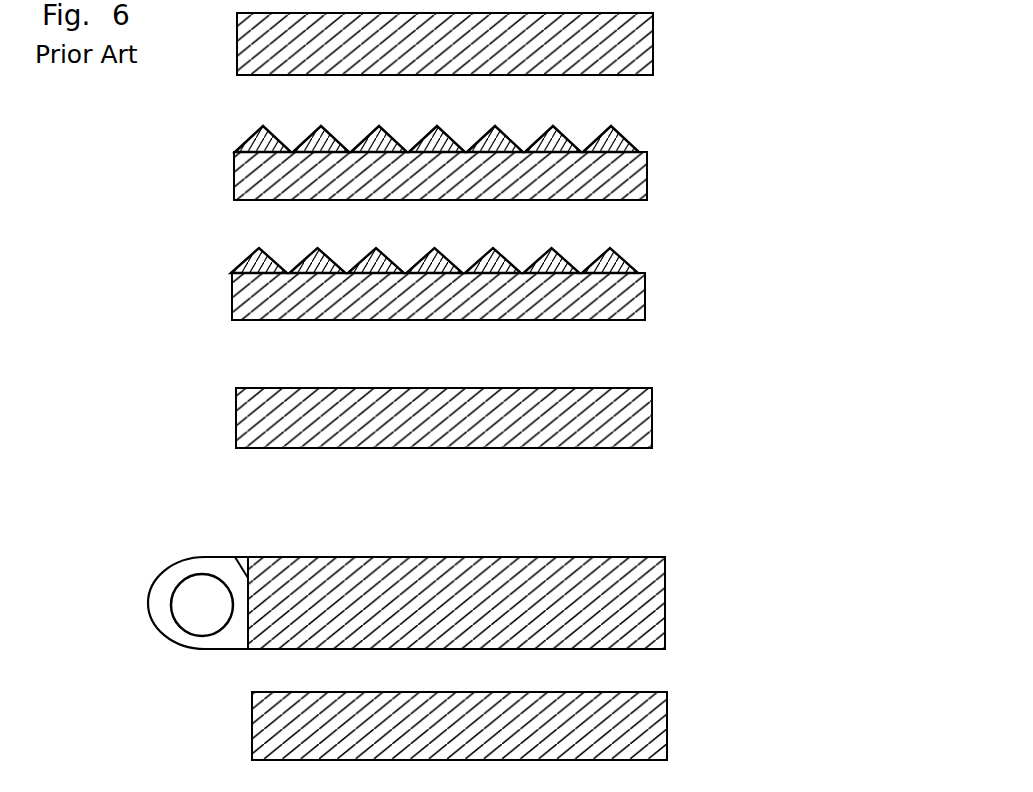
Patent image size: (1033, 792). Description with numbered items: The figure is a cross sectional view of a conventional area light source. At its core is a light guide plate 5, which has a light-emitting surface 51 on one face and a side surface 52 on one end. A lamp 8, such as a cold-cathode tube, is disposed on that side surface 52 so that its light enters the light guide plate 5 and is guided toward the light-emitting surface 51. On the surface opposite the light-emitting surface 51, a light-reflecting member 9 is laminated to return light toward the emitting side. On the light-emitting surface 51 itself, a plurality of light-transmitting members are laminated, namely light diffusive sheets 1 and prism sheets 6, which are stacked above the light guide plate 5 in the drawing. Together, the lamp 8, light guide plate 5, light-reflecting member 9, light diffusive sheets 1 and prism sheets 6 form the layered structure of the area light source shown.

The light diffusive sheet 1 is at (653, 52).
The prism sheet 6 is at (665, 105).
The light guide plate 5 is at (665, 603).
The light-emitting surface 51 is at (660, 545).
The side surface 52 is at (231, 557).
The lamp 8 is at (188, 578).
The light-reflecting member 9 is at (667, 722).